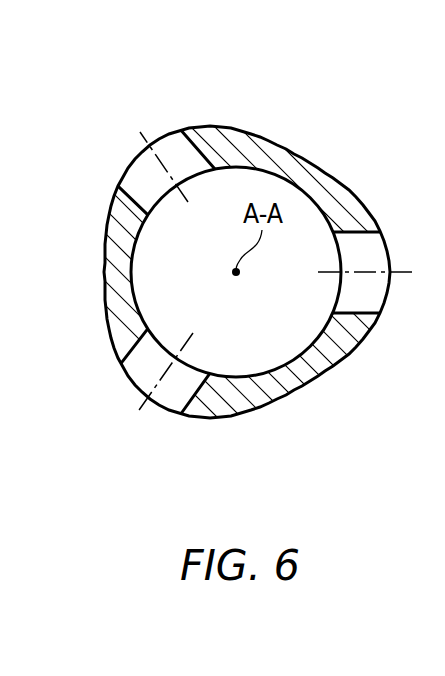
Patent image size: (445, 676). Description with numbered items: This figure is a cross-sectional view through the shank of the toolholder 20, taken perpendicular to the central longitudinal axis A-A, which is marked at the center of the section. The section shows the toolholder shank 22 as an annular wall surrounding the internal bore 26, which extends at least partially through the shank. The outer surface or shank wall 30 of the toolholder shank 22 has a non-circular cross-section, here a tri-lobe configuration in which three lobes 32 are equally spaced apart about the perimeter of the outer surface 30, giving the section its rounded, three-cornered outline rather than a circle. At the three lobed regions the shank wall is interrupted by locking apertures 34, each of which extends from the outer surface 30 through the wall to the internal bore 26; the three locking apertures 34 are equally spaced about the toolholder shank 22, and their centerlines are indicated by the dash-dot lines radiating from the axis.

The toolholder 20 is at (305, 143).
The toolholder shank 22 is at (100, 232).
The internal bore 26 is at (245, 340).
The outer surface 30 is at (334, 376).
The lobes 32 is at (195, 127).
The locking aperture 34 is at (172, 153).